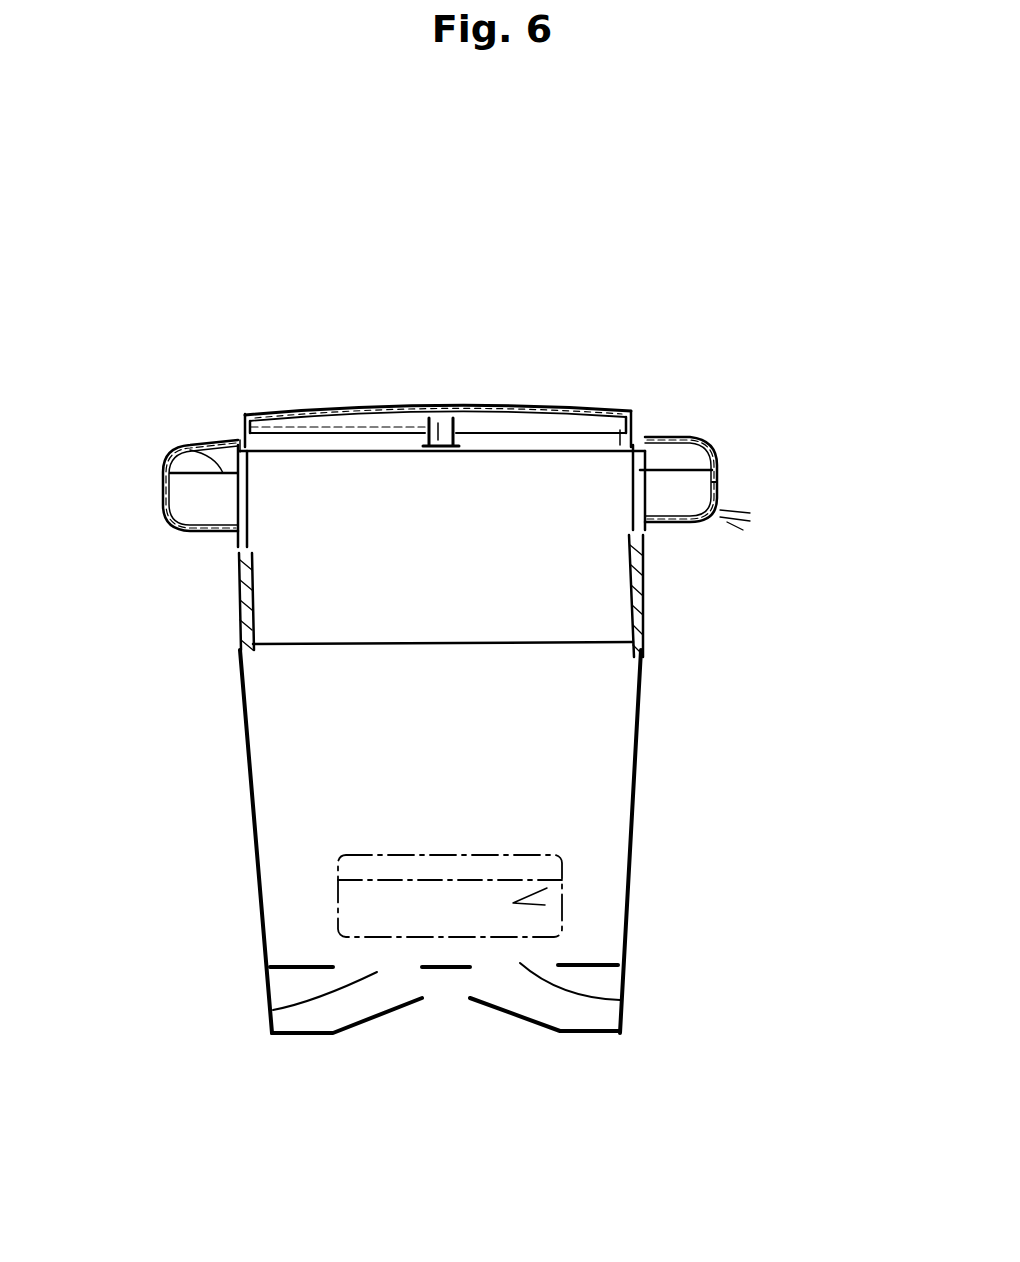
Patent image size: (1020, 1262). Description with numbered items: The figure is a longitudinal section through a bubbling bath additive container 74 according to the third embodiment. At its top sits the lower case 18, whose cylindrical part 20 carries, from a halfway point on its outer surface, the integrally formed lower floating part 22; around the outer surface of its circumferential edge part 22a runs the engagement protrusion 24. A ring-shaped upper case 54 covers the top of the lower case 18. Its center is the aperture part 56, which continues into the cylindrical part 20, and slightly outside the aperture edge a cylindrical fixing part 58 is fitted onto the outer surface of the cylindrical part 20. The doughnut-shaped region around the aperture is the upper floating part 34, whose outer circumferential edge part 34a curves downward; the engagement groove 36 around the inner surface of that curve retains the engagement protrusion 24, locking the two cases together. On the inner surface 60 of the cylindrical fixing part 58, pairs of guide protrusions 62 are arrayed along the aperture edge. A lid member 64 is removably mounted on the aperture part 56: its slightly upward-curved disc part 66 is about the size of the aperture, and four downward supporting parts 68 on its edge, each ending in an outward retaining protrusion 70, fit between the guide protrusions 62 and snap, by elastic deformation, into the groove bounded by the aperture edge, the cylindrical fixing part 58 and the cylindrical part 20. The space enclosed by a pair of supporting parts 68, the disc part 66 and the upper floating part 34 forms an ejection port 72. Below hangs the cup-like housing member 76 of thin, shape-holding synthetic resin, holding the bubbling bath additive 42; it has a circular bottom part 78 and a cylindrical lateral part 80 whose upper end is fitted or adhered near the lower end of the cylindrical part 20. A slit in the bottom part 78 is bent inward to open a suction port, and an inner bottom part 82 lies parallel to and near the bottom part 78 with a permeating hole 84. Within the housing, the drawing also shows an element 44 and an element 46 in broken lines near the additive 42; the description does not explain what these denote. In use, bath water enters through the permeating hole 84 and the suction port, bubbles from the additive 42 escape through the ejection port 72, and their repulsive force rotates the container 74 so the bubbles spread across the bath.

The bubbling bath additive container 74 is at (757, 238).
The lower case 18 is at (755, 527).
The cylindrical part 20 is at (320, 645).
The lower floating part 22 is at (197, 533).
The circumferential edge part 22a is at (187, 447).
The engagement protrusion 24 is at (173, 485).
The upper floating part 34 is at (710, 443).
The outer circumferential edge part 34a is at (717, 468).
The engagement groove 36 is at (717, 485).
The bubbling bath additive 42 is at (513, 903).
The heating element 44 is at (370, 907).
The pump 46 is at (350, 857).
The upper case 54 is at (692, 417).
The aperture part 56 is at (325, 435).
The cylindrical fixing part 58 is at (237, 443).
The inner surface 60 is at (563, 443).
The guide protrusions 62 is at (420, 433).
The lid member 64 is at (540, 374).
The disc part 66 is at (278, 408).
The supporting part 68 is at (240, 440).
The retaining protrusion 70 is at (240, 437).
The ejection port 72 is at (373, 430).
The housing member 76 is at (567, 778).
The bottom part 78 is at (580, 1030).
The lateral part 80 is at (637, 708).
The inner bottom part 82 is at (590, 963).
The permeating hole 84 is at (275, 1009).